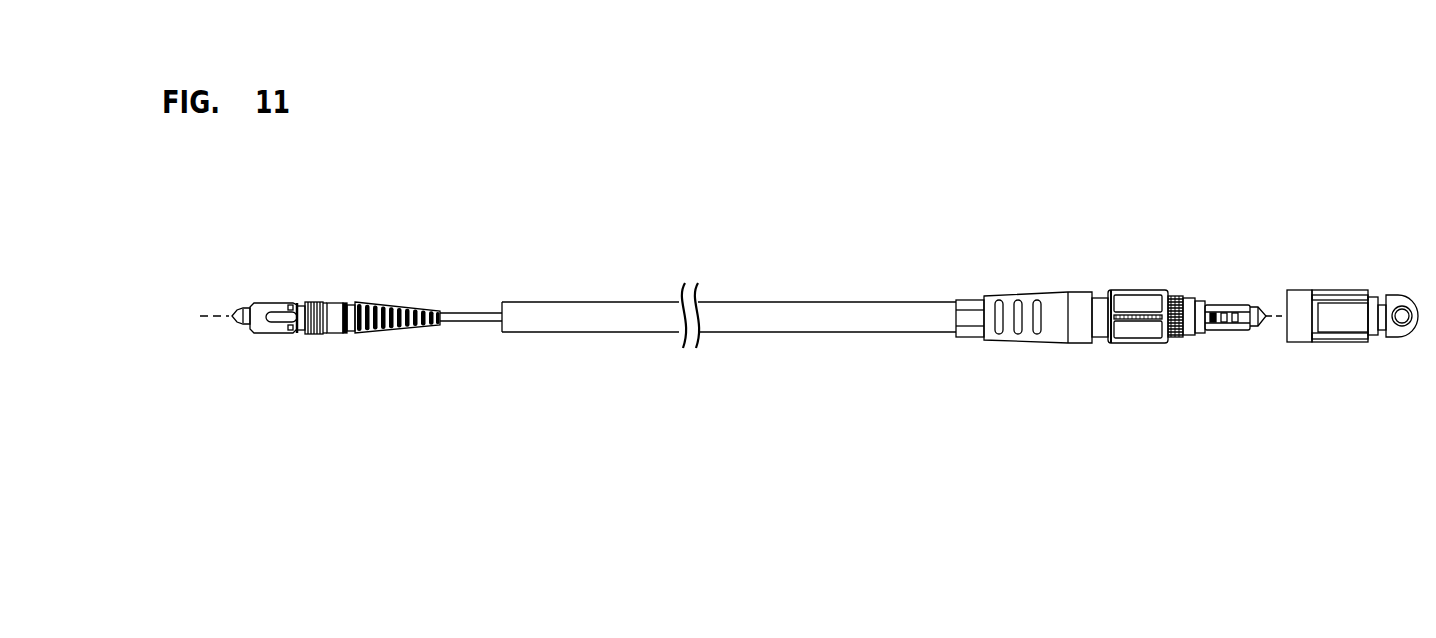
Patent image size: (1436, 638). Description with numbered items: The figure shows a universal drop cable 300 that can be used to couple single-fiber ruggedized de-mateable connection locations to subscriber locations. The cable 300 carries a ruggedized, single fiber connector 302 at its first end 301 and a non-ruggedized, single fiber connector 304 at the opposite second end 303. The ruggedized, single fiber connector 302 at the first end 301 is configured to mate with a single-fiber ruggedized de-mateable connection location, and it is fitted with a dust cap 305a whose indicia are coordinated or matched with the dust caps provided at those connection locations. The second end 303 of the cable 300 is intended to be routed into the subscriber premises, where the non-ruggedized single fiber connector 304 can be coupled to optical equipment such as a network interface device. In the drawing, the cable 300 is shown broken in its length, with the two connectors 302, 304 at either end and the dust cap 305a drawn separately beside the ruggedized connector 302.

The cable 300 is at (732, 344).
The first end 301 is at (1131, 398).
The ruggedized, single fiber connector 302 is at (1216, 300).
The second end 303 is at (336, 367).
The non-ruggedized, single fiber connector 304 is at (272, 300).
The dust cap 305a is at (1345, 291).